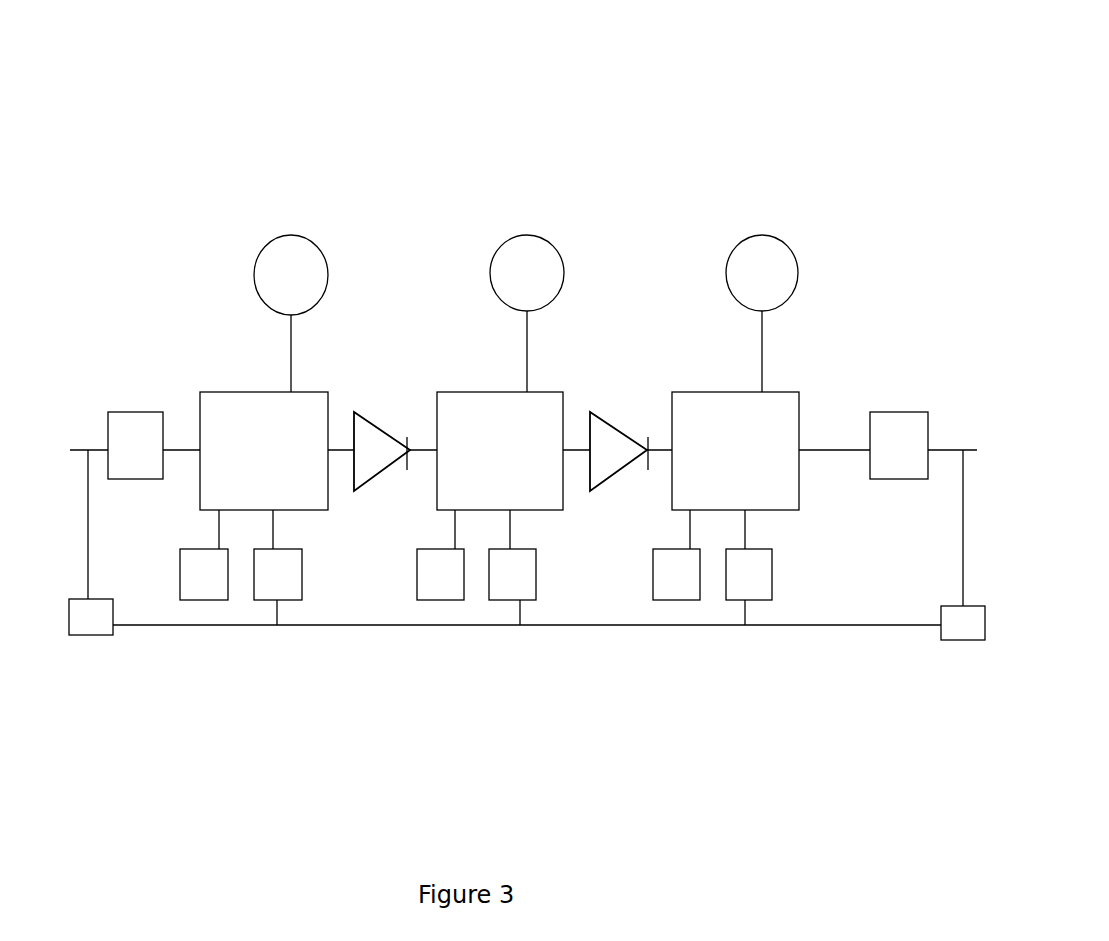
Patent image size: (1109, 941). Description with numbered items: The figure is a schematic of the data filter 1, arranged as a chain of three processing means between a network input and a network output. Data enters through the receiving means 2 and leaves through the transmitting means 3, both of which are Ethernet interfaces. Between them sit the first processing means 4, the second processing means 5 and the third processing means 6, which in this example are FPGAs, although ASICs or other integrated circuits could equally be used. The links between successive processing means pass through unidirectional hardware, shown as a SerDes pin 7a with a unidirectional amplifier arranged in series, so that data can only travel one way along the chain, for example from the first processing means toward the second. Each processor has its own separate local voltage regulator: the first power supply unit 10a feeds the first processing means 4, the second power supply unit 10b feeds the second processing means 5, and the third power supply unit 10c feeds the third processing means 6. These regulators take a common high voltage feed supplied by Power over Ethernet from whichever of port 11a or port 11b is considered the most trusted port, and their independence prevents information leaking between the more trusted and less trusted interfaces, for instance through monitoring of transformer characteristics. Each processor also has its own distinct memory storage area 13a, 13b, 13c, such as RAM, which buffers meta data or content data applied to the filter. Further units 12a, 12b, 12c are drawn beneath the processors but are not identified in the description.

The data filter 1 is at (420, 118).
The receiving means 2 is at (146, 437).
The transmitting means 3 is at (901, 437).
The first processing means 4 is at (307, 418).
The second processing means 5 is at (553, 418).
The third processing means 6 is at (787, 435).
The SerDes pin 7a is at (393, 416).
The first power supply unit 10a is at (288, 608).
The second power supply unit 10b is at (527, 608).
The third power supply unit 10c is at (768, 608).
The port 11a is at (86, 639).
The port 11b is at (942, 643).
The first actuator 12a is at (203, 608).
The second actuator 12b is at (443, 608).
The third actuator 12c is at (666, 608).
The memory storage area 13a is at (285, 262).
The memory storage area 13b is at (525, 247).
The memory storage area 13c is at (765, 263).